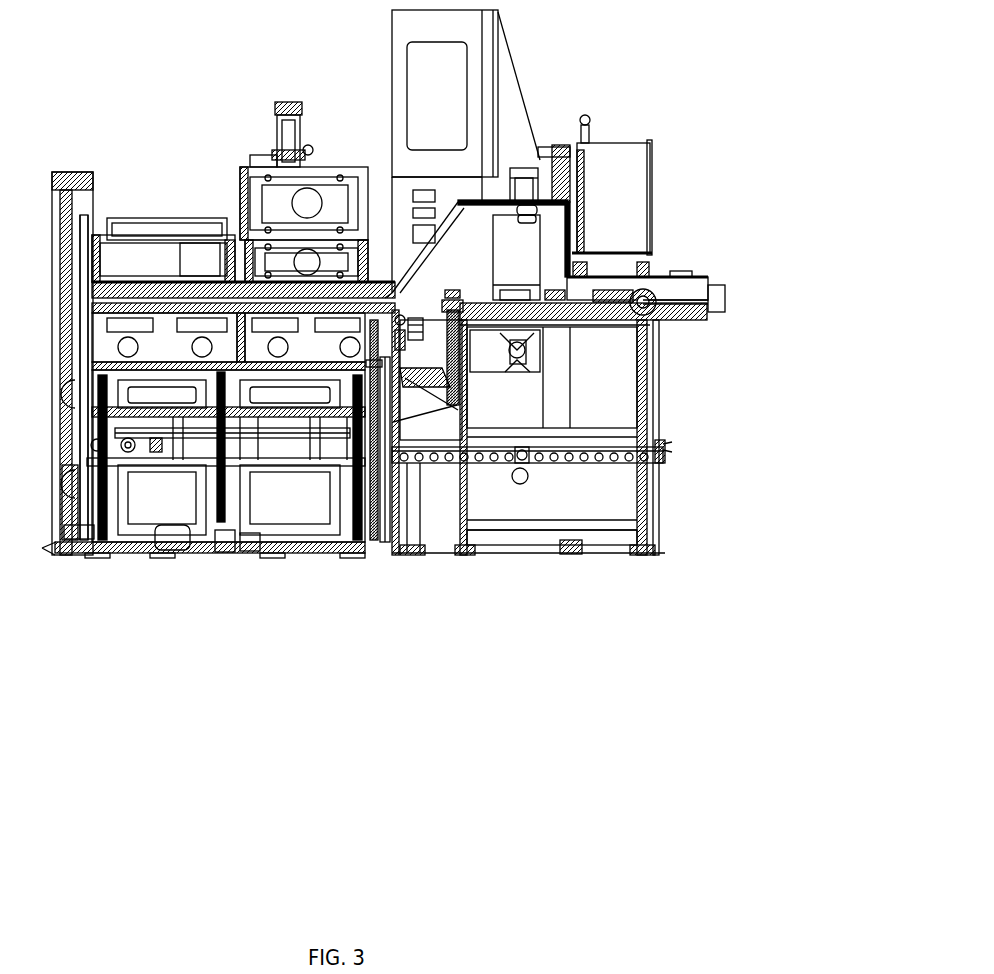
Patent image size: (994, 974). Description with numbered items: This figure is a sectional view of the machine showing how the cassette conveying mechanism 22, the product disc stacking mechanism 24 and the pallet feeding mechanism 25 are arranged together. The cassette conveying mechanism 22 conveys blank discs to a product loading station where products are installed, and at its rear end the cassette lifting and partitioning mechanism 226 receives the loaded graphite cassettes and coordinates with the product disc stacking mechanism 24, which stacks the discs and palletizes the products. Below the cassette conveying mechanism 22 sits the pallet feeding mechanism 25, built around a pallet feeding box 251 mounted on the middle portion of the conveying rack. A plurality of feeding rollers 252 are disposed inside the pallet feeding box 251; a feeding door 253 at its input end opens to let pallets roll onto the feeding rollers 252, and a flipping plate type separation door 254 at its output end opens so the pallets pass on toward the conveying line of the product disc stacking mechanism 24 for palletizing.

The cassette conveying mechanism 22 is at (607, 290).
The product disc stacking mechanism 24 is at (232, 430).
The pallet feeding mechanism 25 is at (559, 468).
The cassette lifting and partitioning mechanism 226 is at (417, 410).
The pallet feeding box 251 is at (588, 463).
The feeding rollers 252 is at (543, 465).
The feeding door 253 is at (666, 448).
The flipping plate type separation door 254 is at (374, 455).